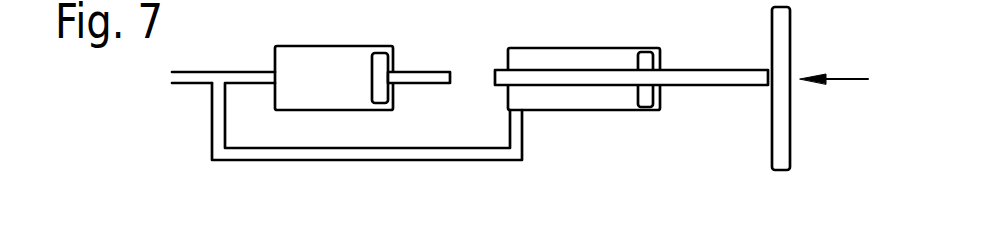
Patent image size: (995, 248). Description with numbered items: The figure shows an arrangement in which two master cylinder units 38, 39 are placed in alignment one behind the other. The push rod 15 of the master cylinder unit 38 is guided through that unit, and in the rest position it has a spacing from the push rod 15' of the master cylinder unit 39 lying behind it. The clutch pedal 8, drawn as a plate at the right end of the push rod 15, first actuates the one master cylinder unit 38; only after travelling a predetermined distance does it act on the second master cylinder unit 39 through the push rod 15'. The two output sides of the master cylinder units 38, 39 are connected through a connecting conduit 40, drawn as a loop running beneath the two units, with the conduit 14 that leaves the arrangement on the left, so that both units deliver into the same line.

The conduit 14 is at (183, 84).
The connecting conduit 40 is at (386, 161).
The master cylinder unit 39 is at (360, 36).
The push rod 15' is at (420, 44).
The master cylinder unit 38 is at (595, 48).
The push rod 15 is at (631, 110).
The clutch pedal 8 is at (780, 32).